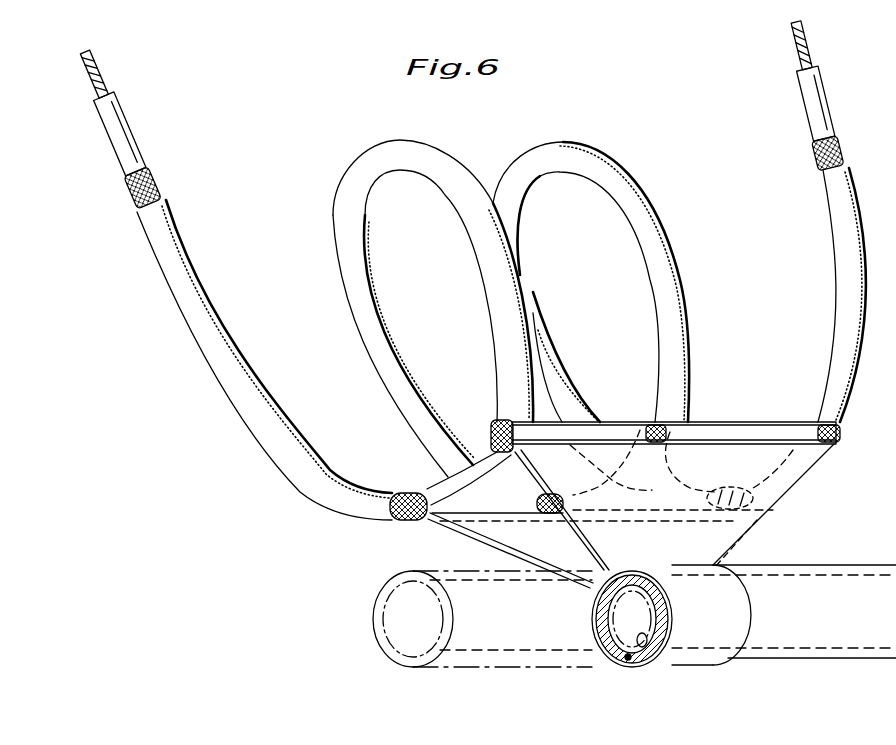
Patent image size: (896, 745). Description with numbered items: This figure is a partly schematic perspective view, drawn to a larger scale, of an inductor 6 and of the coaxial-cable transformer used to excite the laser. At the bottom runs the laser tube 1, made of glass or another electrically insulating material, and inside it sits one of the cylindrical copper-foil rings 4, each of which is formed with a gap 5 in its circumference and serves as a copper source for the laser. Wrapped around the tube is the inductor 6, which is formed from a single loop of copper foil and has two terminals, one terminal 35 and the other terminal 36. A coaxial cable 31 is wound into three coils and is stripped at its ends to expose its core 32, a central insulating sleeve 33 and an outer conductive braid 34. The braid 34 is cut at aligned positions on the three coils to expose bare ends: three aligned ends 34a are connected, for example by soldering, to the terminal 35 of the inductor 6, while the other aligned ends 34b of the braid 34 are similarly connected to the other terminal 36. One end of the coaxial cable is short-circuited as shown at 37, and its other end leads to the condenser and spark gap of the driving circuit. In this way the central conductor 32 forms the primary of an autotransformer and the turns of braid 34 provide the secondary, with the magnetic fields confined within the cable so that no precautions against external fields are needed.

The tube 1 is at (592, 617).
The cylindrical copper-foil ring 4 is at (645, 655).
The gap 5 is at (627, 661).
The inductor 6 is at (722, 625).
The coaxial cable 31 is at (197, 362).
The core 32 is at (102, 80).
The central insulating sleeve 33 is at (108, 130).
The outer conductive braid 34 is at (152, 183).
The aligned braid ends 34a is at (498, 424).
The other aligned braid ends 34b is at (415, 492).
The terminal of the inductor 35 is at (712, 430).
The other terminal of the inductor 36 is at (440, 515).
The short-circuited cable end 37 is at (832, 92).